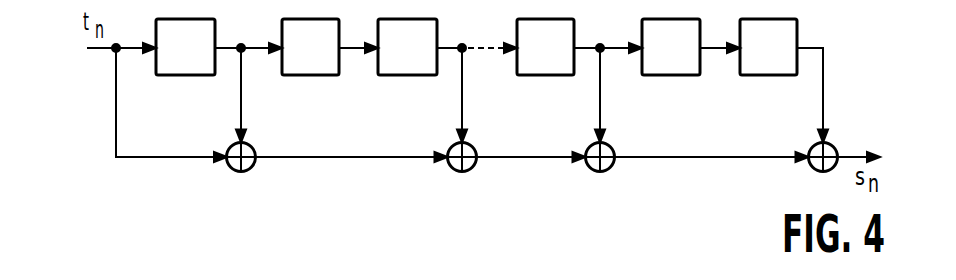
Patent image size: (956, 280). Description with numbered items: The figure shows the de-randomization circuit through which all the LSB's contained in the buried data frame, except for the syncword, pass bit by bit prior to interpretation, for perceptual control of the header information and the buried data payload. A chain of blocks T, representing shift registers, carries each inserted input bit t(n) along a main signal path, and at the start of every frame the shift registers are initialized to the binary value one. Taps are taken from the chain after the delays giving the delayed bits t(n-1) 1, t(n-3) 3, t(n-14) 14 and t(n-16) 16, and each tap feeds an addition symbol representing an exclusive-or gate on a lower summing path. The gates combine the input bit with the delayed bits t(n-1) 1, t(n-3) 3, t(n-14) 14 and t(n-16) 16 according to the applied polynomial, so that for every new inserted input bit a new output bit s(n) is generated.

The delayed bit t(n-1) tap with modulo-2 adder 1 is at (260, 108).
The delayed bit t(n-3) tap with modulo-2 adder 3 is at (482, 108).
The delayed bit t(n-14) tap with modulo-2 adder 14 is at (626, 108).
The delayed bit t(n-16) tap with modulo-2 adder 16 is at (842, 110).